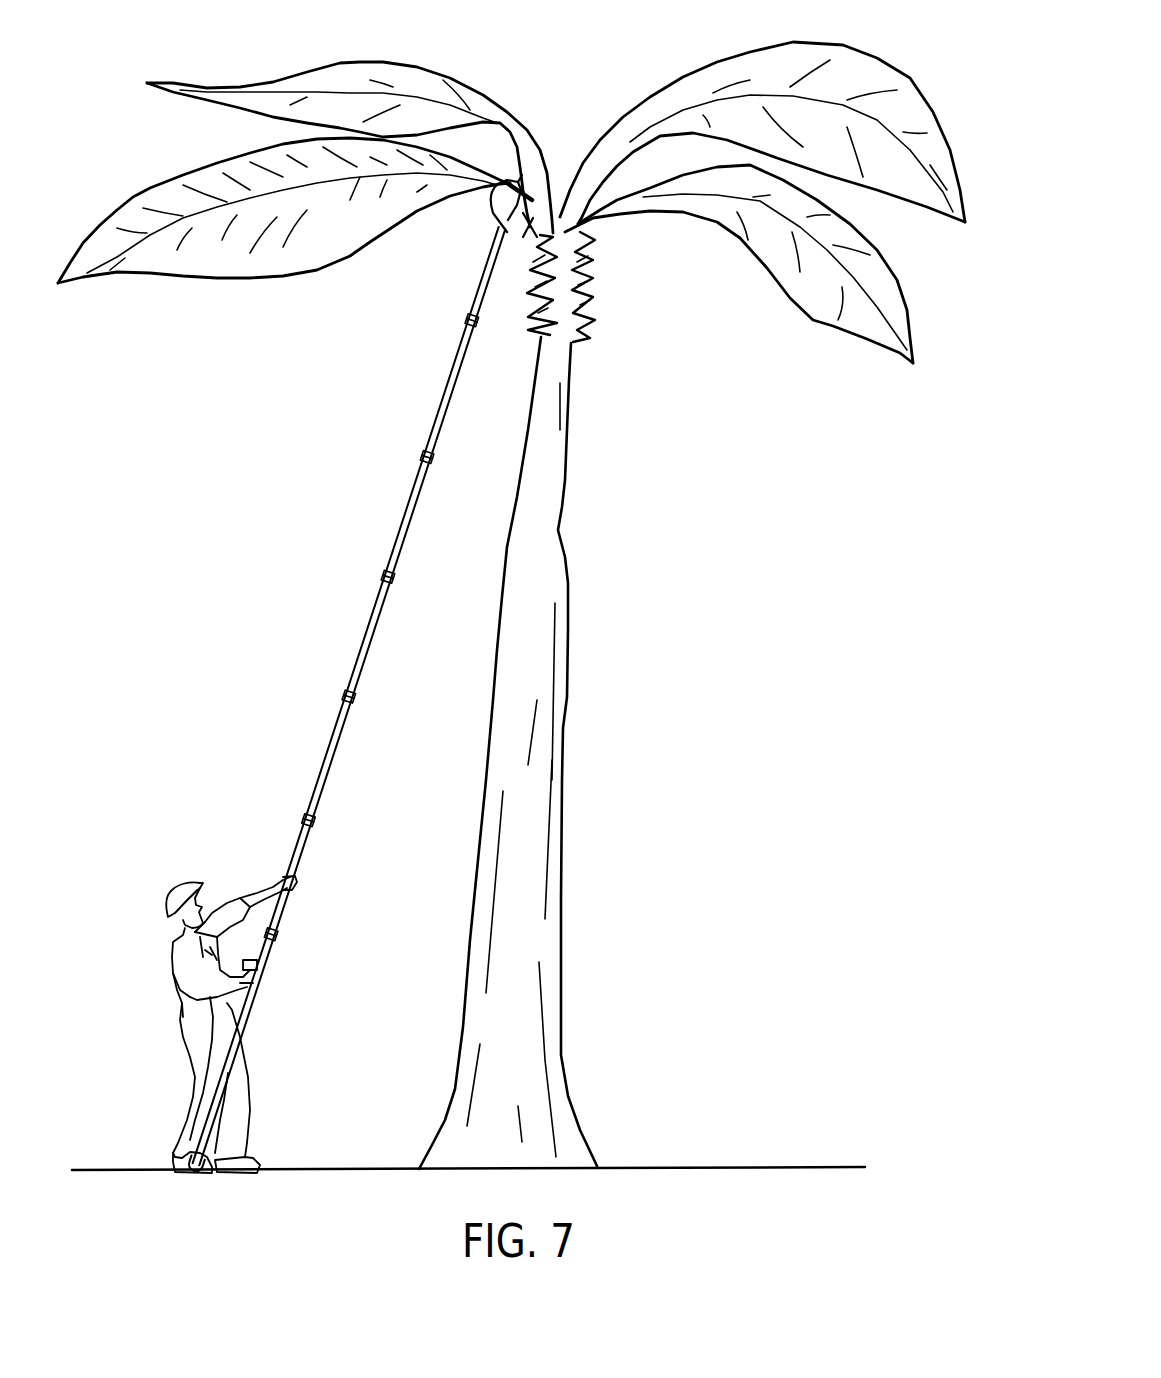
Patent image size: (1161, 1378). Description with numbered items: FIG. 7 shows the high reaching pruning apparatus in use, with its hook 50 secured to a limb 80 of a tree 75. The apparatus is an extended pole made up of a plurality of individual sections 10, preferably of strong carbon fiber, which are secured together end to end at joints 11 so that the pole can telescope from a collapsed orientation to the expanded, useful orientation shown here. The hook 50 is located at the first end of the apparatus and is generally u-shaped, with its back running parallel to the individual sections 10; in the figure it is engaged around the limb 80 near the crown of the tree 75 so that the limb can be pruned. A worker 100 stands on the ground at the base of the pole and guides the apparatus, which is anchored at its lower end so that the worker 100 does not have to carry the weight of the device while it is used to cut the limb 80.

The individual sections 10 is at (372, 707).
The joints 11 is at (393, 583).
The hook 50 is at (490, 210).
The tree 75 is at (557, 552).
The limb 80 is at (518, 232).
The worker 100 is at (173, 985).